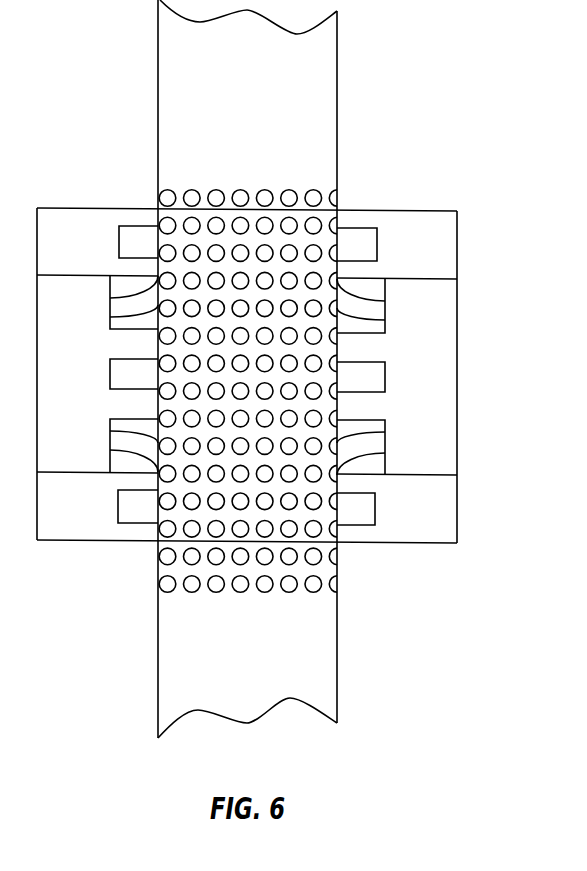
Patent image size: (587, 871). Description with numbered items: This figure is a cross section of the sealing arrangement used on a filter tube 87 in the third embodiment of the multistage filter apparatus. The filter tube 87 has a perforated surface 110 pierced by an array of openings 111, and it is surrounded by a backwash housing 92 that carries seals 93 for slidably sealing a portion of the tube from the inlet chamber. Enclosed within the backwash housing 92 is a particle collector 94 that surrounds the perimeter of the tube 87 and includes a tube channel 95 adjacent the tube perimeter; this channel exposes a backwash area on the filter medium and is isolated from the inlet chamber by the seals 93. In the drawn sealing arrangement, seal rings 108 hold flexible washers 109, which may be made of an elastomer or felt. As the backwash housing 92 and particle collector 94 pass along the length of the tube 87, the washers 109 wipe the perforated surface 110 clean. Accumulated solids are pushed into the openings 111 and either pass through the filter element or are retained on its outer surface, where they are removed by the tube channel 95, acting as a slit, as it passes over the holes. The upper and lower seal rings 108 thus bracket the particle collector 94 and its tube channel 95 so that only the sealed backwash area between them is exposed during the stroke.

The filter tube 87 is at (279, 187).
The backwash housing 92 is at (277, 375).
The seal 93 is at (386, 242).
The particle collector 94 is at (277, 375).
The tube channel 95 is at (378, 362).
The seal ring 108 is at (218, 288).
The flexible washer 109 is at (218, 436).
The perforated surface 110 is at (212, 369).
The opening 111 is at (219, 567).